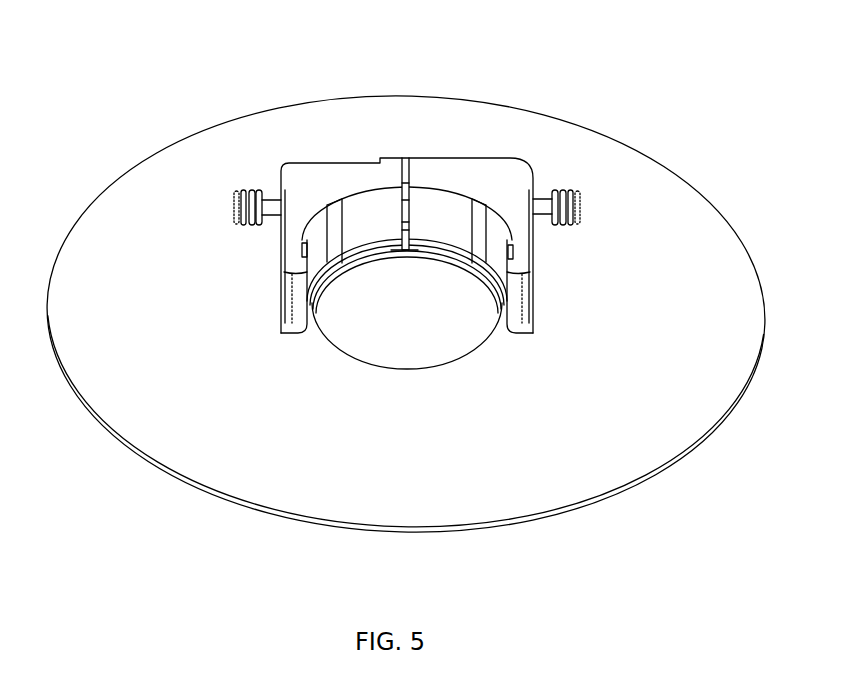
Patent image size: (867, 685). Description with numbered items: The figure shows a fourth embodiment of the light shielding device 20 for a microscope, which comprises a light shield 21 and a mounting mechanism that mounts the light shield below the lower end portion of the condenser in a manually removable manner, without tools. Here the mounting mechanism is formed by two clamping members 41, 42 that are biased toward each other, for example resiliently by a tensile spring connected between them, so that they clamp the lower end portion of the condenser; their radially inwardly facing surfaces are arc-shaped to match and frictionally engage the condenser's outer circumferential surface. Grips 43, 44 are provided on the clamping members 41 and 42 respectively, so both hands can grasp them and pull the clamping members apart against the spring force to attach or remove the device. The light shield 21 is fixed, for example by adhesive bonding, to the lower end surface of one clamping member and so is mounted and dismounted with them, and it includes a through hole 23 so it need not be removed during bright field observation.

The light shielding device 20 is at (430, 44).
The light shield 21 is at (673, 243).
The through hole 23 is at (373, 333).
The clamping member 41 is at (330, 177).
The clamping member 42 is at (503, 177).
The grip 43 is at (268, 205).
The grip 44 is at (545, 204).